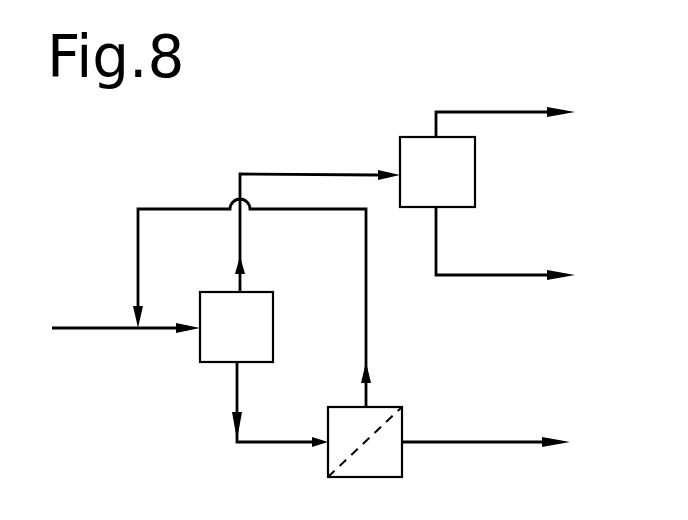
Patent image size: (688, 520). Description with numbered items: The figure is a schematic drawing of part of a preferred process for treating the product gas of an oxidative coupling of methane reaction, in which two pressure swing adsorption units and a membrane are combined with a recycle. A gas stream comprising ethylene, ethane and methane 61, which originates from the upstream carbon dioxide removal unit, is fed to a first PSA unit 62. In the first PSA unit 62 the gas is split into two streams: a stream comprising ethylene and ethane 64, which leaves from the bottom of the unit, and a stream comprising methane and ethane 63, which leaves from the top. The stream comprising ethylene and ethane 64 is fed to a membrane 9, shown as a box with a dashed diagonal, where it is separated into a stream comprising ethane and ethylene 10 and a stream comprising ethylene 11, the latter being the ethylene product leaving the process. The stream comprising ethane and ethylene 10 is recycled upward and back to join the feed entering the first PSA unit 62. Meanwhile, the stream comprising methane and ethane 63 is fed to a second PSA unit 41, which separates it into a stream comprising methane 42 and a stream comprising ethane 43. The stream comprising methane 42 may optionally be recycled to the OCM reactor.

The membrane 9 is at (365, 442).
The stream comprising ethane and ethylene 10 is at (269, 303).
The stream comprising ethylene 11 is at (486, 425).
The second PSA unit 41 is at (437, 172).
The stream comprising methane 42 is at (505, 106).
The stream comprising ethane 43 is at (505, 243).
The gas stream comprising ethylene, ethane and methane 61 is at (126, 310).
The first PSA unit 62 is at (236, 327).
The stream comprising methane and ethane 63 is at (298, 231).
The stream comprising ethylene and ethane 64 is at (280, 404).